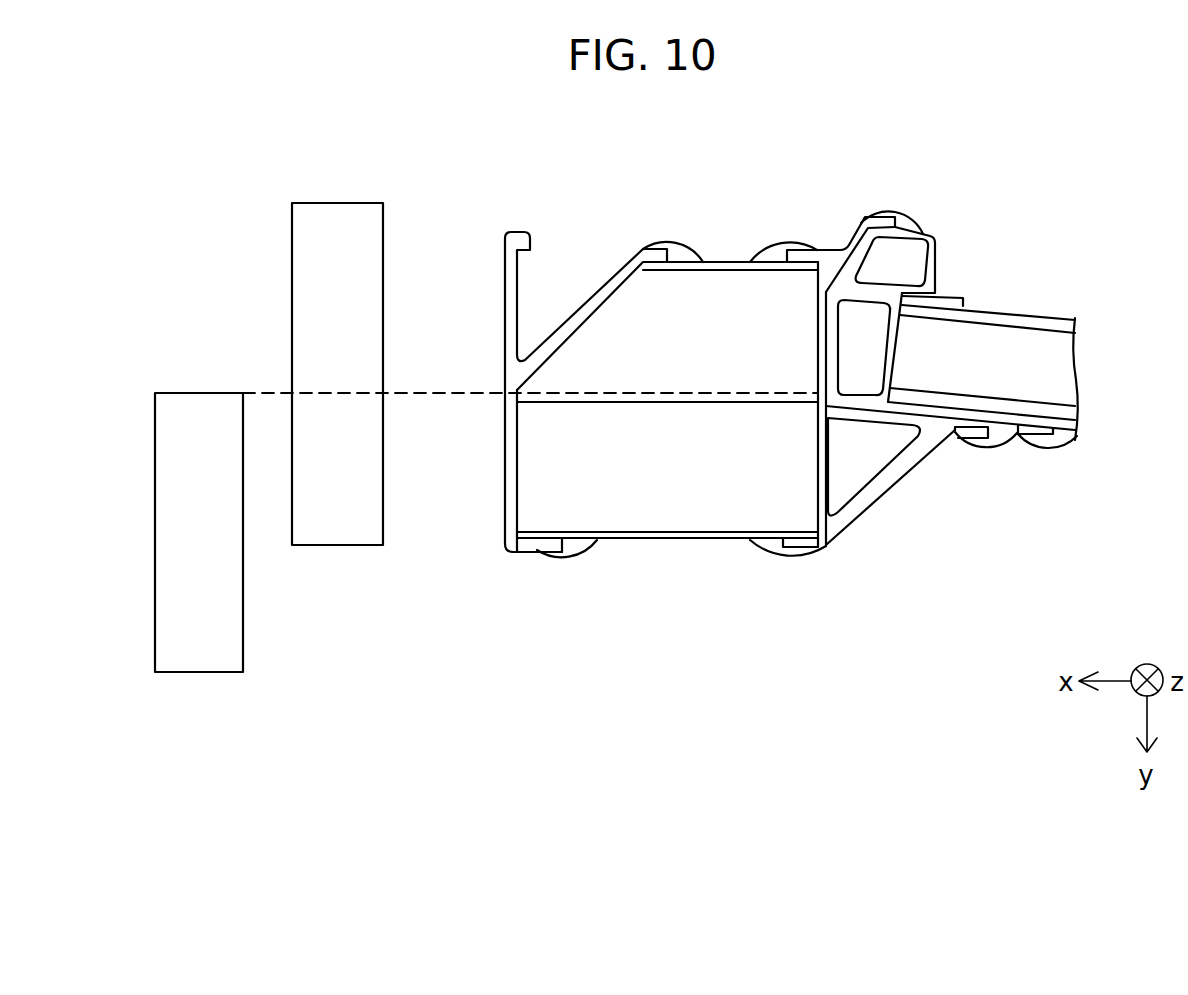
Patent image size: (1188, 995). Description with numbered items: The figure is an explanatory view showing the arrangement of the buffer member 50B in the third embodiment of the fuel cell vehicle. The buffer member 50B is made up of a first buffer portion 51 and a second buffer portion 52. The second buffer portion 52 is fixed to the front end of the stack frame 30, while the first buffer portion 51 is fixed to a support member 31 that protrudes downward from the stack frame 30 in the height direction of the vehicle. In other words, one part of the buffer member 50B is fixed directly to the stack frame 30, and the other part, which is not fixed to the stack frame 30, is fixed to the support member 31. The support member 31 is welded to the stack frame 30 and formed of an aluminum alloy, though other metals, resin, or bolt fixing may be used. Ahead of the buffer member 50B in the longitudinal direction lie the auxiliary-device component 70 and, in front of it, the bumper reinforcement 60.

The stack frame 30 is at (1000, 310).
The support member 31 is at (886, 494).
The buffer member 50B is at (799, 175).
The first buffer portion 51 is at (663, 540).
The second buffer portion 52 is at (733, 262).
The bumper reinforcement 60 is at (198, 672).
The auxiliary-device component 70 is at (335, 545).